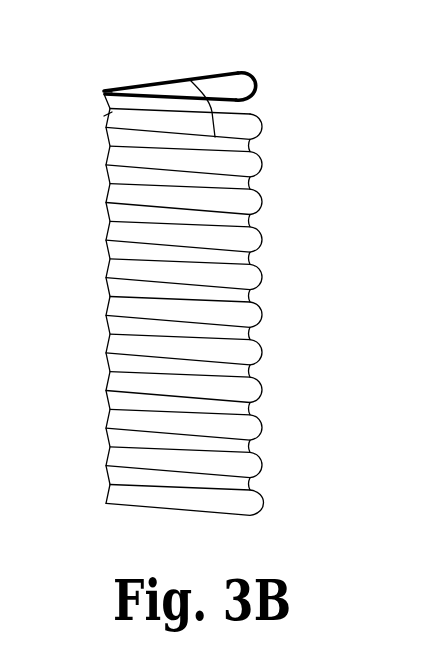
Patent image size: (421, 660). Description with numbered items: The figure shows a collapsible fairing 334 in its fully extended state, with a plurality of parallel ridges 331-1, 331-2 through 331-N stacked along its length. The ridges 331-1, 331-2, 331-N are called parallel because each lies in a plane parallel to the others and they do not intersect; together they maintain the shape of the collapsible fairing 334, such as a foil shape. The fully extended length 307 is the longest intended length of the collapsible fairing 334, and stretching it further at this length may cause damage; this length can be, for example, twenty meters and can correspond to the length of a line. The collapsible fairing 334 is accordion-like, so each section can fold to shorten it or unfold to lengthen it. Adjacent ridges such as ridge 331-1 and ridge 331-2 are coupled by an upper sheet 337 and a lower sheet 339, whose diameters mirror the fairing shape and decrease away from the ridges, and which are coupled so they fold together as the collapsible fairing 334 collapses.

The fully extended length 307 is at (279, 72).
The parallel ridge 331-1 is at (247, 72).
The parallel ridge 331-2 is at (178, 77).
The parallel ridge 331-N is at (230, 514).
The collapsible fairing 334 is at (106, 293).
The upper sheet 337 is at (104, 93).
The lower sheet 339 is at (104, 116).